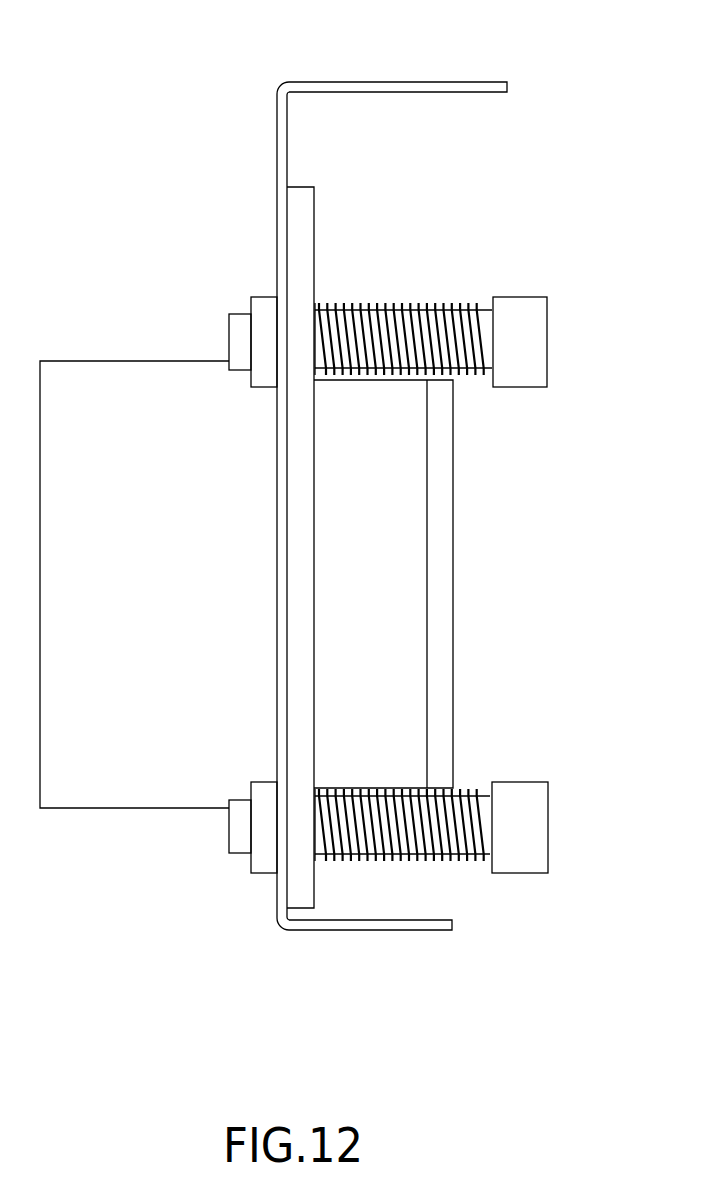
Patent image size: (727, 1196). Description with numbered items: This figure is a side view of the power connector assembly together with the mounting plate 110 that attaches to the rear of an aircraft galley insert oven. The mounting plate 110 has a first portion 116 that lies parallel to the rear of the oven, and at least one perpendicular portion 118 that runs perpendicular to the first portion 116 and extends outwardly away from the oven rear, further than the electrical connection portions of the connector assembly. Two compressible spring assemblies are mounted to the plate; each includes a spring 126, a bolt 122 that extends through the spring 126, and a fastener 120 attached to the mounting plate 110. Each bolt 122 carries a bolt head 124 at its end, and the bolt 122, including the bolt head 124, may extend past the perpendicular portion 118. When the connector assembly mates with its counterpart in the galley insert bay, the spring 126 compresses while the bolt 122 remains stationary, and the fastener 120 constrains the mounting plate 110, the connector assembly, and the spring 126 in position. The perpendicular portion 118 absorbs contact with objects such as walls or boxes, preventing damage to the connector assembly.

The mounting plate 110 is at (277, 115).
The first portion 116 is at (287, 178).
The perpendicular portion 118 is at (447, 82).
The fastener 120 is at (263, 873).
The bolt 122 is at (240, 853).
The bolt head 124 is at (547, 340).
The spring 126 is at (438, 306).